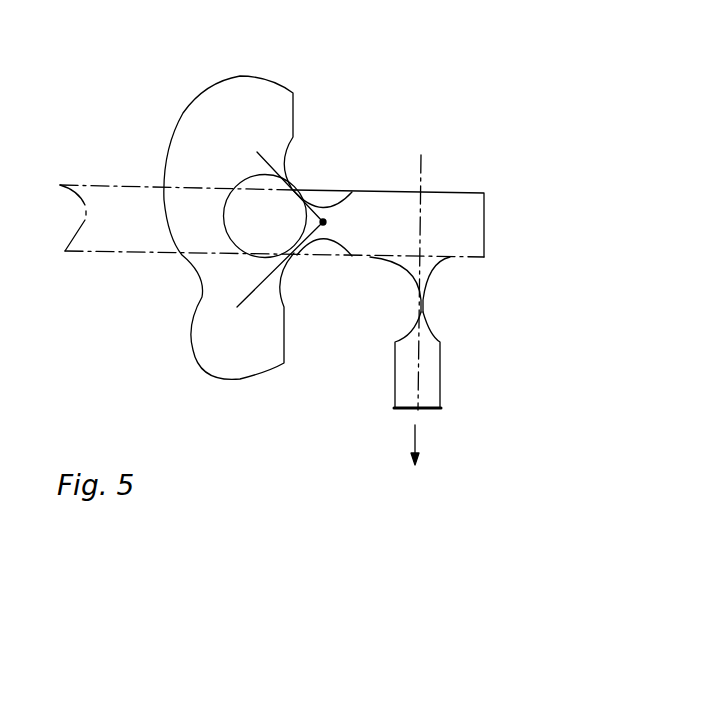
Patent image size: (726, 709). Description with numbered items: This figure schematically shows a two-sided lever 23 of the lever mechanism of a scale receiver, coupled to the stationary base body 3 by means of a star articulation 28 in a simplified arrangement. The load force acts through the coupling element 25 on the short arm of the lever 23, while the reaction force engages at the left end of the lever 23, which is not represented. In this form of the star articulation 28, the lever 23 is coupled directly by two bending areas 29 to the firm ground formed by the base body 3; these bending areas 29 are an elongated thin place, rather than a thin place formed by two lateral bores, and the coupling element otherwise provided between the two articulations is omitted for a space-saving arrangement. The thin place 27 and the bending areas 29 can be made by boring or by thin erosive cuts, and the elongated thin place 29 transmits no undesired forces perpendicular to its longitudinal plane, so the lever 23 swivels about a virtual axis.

The stationary base body 3 is at (277, 100).
The lever 23 is at (470, 198).
The star articulation 28 is at (338, 153).
The bending areas 29 is at (285, 197).
The thin place 27 is at (425, 304).
The coupling element 25 is at (441, 378).